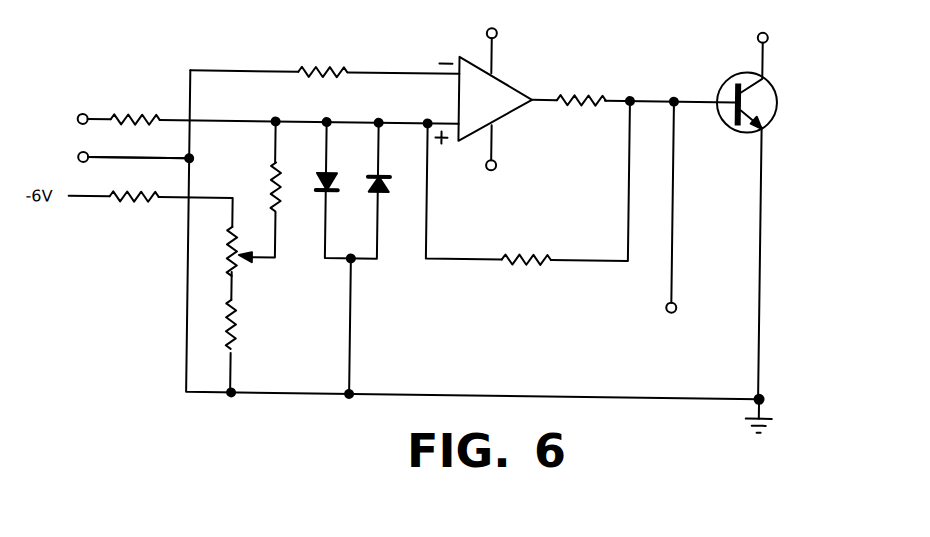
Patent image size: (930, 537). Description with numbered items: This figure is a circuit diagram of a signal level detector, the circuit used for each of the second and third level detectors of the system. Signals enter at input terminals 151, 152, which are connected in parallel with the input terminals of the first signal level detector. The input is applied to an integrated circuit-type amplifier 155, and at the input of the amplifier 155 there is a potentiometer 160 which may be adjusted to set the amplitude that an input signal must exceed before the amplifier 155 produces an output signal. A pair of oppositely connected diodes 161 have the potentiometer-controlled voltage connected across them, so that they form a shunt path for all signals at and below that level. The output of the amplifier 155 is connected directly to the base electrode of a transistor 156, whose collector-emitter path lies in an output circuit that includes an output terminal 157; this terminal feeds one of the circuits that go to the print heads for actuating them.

The input terminal 151 is at (82, 118).
The input terminal 152 is at (77, 162).
The integrated circuit-type amplifier 155 is at (466, 98).
The transistor 156 is at (731, 118).
The output terminal 157 is at (765, 34).
The potentiometer 160 is at (232, 277).
The pair of oppositely connected diodes 161 is at (369, 187).